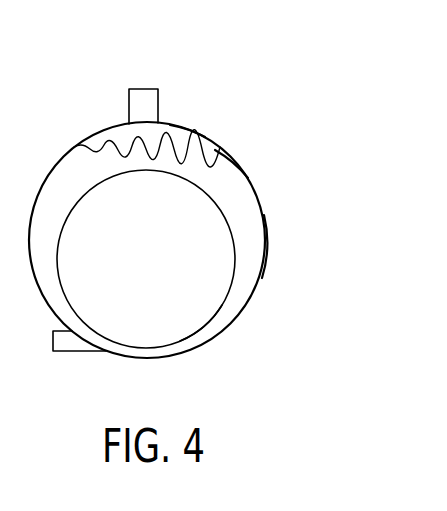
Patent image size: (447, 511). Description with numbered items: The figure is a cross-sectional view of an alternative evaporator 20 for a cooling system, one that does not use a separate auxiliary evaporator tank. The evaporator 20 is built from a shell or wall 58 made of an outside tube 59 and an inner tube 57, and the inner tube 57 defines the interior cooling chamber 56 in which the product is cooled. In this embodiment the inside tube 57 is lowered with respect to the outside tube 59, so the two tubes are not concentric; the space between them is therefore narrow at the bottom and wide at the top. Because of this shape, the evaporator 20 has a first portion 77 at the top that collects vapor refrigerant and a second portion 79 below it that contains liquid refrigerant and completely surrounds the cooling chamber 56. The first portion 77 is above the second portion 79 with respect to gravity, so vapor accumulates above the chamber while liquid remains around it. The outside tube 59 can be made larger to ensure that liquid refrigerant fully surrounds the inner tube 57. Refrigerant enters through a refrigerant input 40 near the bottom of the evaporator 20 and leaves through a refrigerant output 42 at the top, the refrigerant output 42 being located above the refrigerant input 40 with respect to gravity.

The evaporator 20 is at (298, 177).
The refrigerant input 40 is at (81, 352).
The refrigerant output 42 is at (158, 104).
The cooling chamber 56 is at (165, 277).
The inner tube 57 is at (213, 318).
The wall 58 is at (142, 173).
The outside tube 59 is at (234, 160).
The first portion 77 is at (190, 123).
The second portion 79 is at (268, 247).